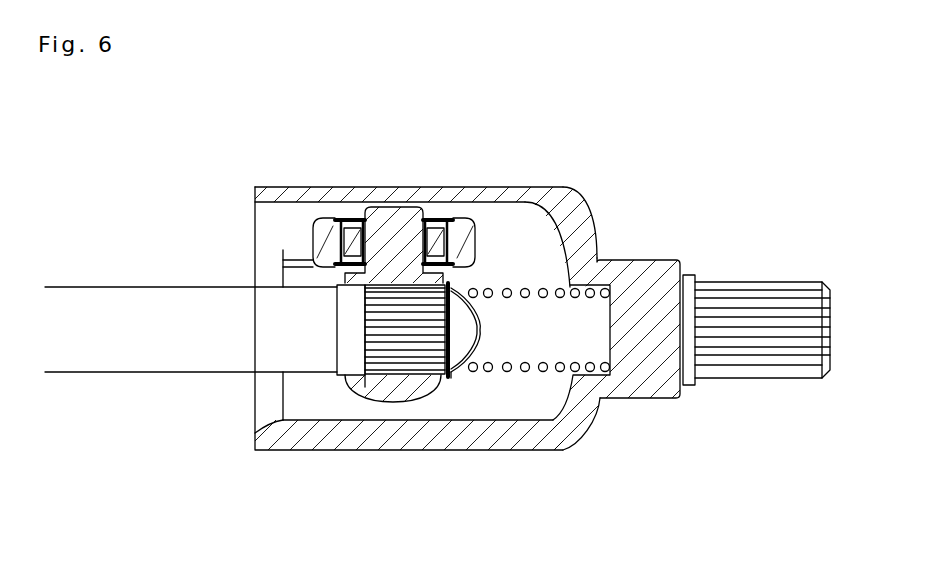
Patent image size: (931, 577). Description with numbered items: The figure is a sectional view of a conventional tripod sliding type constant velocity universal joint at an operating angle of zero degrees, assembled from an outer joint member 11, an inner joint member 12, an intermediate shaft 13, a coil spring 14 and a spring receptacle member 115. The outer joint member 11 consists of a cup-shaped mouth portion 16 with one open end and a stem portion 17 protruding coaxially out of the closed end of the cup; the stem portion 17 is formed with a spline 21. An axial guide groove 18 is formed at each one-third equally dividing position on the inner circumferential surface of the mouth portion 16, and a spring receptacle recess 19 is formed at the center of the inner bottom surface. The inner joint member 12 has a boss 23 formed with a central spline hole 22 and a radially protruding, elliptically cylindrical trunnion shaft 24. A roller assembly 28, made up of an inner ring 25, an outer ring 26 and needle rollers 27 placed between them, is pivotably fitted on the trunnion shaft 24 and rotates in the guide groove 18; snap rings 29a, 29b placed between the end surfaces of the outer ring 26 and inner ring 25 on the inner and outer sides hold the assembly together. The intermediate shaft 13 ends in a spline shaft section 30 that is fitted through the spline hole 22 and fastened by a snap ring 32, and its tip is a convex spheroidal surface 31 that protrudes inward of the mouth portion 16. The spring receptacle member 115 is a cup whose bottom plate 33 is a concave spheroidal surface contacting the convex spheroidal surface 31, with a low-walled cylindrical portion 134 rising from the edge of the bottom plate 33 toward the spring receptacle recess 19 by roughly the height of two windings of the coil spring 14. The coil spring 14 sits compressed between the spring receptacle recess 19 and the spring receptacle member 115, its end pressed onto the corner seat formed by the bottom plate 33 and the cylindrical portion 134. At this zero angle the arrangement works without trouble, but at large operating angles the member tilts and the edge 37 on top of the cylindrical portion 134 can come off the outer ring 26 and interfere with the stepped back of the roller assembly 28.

The outer joint member 11 is at (487, 187).
The inner joint member 12 is at (356, 395).
The intermediate shaft 13 is at (88, 286).
The coil spring 14 is at (557, 374).
The mouth portion 16 is at (258, 186).
The stem portion 17 is at (773, 280).
The axial guide groove 18 is at (548, 223).
The spring receptacle recess 19 is at (600, 262).
The spline 21 is at (770, 363).
The spline hole 22 is at (383, 364).
The boss 23 is at (404, 402).
The trunnion shaft 24 is at (383, 208).
The inner ring 25 is at (348, 222).
The outer ring 26 is at (308, 235).
The needle rollers 27 is at (335, 216).
The roller assembly 28 is at (482, 247).
The snap ring 29a is at (284, 263).
The snap ring 29b is at (447, 217).
The spline shaft section 30 is at (379, 340).
The convex spheroidal surface 31 is at (456, 380).
The snap ring 32 is at (448, 379).
The bottom plate 33 is at (480, 330).
The edge 37 is at (478, 288).
The spring receptacle member 115 is at (480, 378).
The cylindrical portion 134 is at (477, 287).